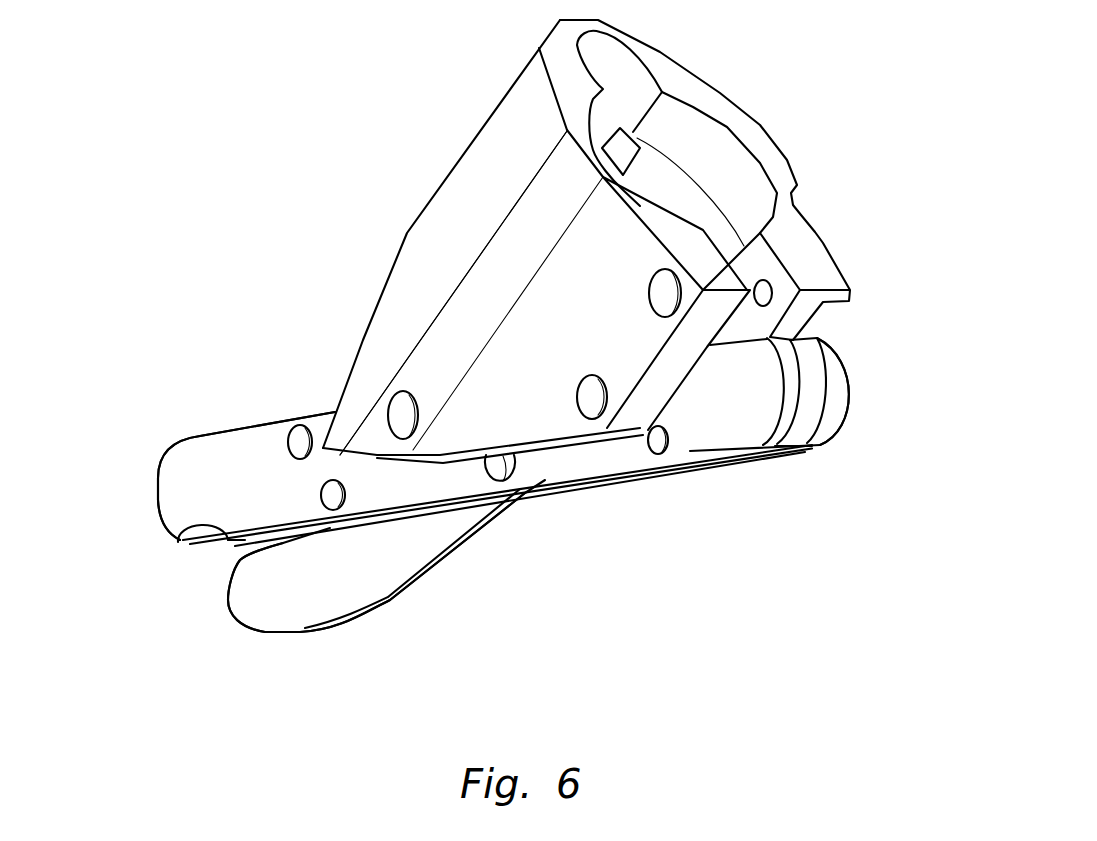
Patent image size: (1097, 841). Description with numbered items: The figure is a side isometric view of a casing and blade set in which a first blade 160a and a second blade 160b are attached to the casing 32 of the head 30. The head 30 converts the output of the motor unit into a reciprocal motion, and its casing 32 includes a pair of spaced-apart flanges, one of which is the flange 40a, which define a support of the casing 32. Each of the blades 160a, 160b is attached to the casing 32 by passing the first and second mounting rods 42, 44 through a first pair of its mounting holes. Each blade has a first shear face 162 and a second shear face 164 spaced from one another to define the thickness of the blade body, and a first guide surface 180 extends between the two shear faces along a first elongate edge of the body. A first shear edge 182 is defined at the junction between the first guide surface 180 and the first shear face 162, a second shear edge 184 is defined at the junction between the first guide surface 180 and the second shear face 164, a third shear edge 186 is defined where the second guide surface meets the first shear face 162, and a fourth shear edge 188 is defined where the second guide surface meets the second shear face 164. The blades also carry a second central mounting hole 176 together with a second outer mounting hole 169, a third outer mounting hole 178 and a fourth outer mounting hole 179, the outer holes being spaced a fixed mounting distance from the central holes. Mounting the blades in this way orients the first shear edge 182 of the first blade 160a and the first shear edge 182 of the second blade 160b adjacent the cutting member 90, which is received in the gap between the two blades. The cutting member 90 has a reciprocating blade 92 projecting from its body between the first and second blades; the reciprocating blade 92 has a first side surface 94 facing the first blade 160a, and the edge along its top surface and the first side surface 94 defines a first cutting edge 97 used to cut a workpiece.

The head 30 is at (482, 168).
The casing 32 is at (412, 234).
The first mounting rod 42 is at (385, 408).
The second mounting rod 44 is at (578, 403).
The flange 40a is at (498, 424).
The second outer mounting hole 169 is at (298, 428).
The fourth shear edge 188 is at (188, 437).
The first blade 160a is at (160, 480).
The second shear face 164 is at (233, 486).
The fourth outer mounting hole 179 is at (320, 495).
The second shear edge 184 is at (173, 543).
The first shear edge 182 is at (230, 548).
The first side surface 94 is at (330, 596).
The first cutting edge 97 is at (232, 602).
The reciprocating blade 92 is at (355, 590).
The cutting member 90 is at (387, 605).
The second central mounting hole 176 is at (505, 490).
The first guide surface 180 is at (558, 497).
The third outer mounting hole 178 is at (665, 458).
The second blade 160b is at (835, 383).
The first shear face 162 is at (808, 398).
The third shear edge 186 is at (825, 350).